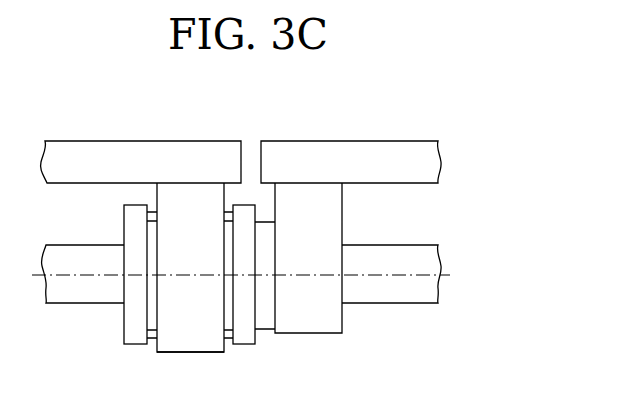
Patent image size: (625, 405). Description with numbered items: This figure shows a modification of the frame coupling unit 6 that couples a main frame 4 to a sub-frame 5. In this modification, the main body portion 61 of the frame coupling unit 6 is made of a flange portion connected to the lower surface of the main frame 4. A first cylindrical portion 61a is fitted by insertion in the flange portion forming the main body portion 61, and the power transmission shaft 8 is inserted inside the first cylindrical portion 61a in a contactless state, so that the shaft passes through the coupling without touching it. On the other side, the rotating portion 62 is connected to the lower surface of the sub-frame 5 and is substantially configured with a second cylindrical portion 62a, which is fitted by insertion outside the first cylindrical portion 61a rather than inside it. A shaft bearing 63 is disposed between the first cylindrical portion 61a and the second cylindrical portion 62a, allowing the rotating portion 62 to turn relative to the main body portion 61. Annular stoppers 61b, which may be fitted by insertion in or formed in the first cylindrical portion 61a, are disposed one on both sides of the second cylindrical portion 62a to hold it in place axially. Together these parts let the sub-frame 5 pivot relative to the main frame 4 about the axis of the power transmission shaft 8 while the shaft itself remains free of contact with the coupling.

The main frame 4 is at (311, 141).
The sub-frame 5 is at (184, 141).
The frame coupling unit 6 is at (333, 367).
The power transmission shaft 8 is at (80, 304).
The main body portion 61 is at (343, 207).
The first cylindrical portion 61a is at (262, 332).
The annular stopper 61b is at (123, 226).
The rotating portion 62 is at (156, 197).
The second cylindrical portion 62a is at (187, 353).
The shaft bearing 63 is at (149, 346).